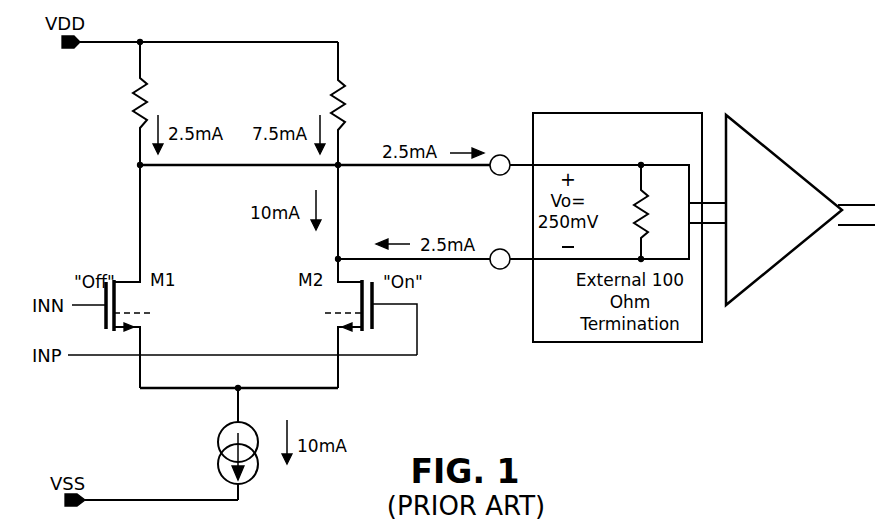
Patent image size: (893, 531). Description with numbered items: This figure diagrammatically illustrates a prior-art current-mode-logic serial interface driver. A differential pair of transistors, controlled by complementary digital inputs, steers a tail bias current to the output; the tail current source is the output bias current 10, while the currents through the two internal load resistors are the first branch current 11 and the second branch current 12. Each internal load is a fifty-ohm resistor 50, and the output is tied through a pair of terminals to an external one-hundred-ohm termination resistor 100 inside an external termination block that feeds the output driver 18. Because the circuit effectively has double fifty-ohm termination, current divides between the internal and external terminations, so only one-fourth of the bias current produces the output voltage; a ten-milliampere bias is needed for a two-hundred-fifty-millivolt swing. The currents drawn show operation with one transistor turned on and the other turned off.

The output driver 18 is at (783, 161).
The tail current source I0 10 is at (182, 256).
The current I1 through resistor R1 11 is at (249, 103).
The current I2 through resistor R2 12 is at (346, 150).
The 50 ohm resistors R1, R2 50 is at (238, 102).
The 100 ohm termination resistor R3 100 is at (644, 189).